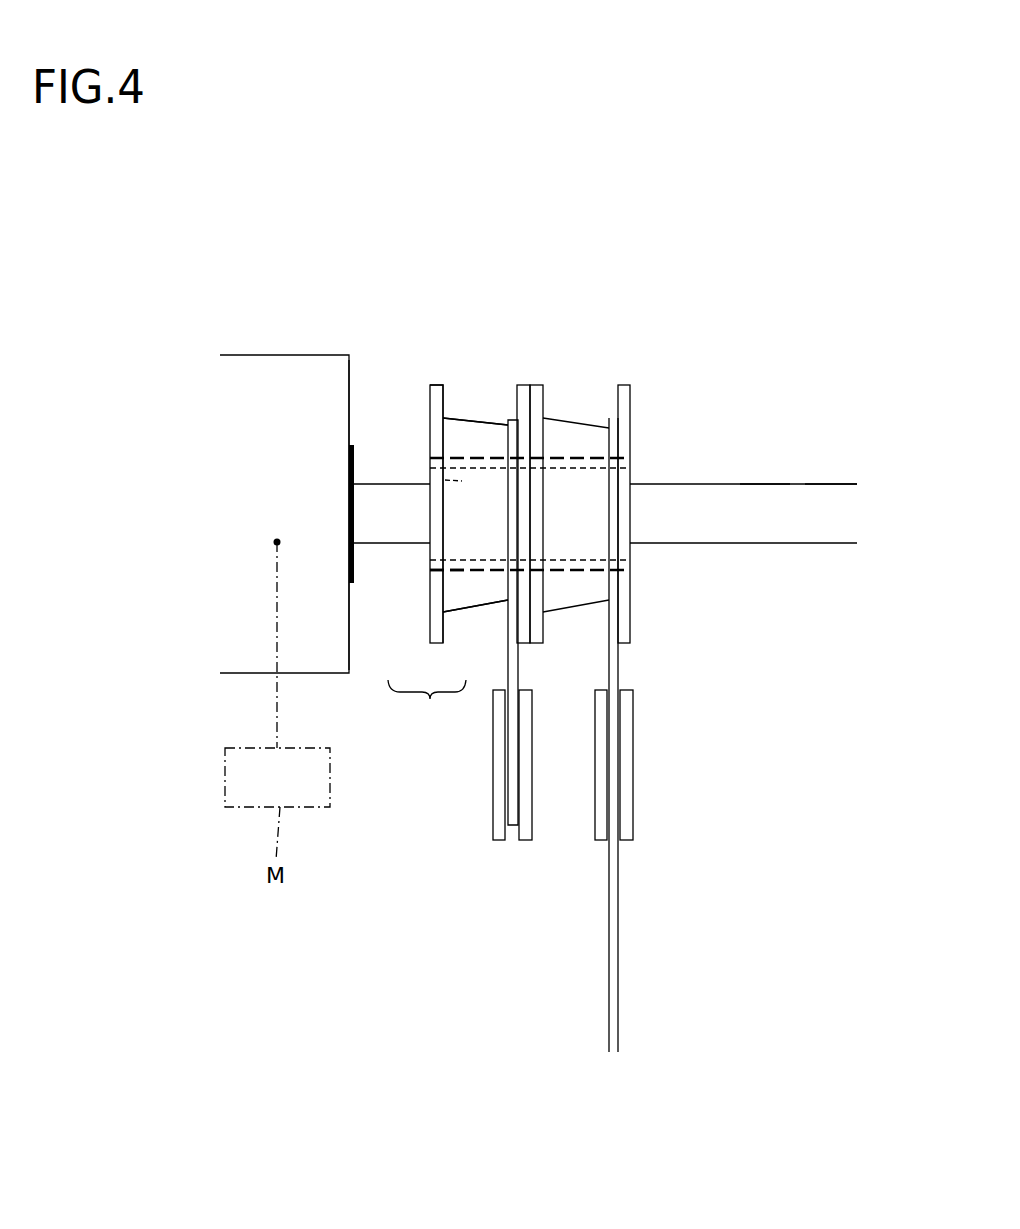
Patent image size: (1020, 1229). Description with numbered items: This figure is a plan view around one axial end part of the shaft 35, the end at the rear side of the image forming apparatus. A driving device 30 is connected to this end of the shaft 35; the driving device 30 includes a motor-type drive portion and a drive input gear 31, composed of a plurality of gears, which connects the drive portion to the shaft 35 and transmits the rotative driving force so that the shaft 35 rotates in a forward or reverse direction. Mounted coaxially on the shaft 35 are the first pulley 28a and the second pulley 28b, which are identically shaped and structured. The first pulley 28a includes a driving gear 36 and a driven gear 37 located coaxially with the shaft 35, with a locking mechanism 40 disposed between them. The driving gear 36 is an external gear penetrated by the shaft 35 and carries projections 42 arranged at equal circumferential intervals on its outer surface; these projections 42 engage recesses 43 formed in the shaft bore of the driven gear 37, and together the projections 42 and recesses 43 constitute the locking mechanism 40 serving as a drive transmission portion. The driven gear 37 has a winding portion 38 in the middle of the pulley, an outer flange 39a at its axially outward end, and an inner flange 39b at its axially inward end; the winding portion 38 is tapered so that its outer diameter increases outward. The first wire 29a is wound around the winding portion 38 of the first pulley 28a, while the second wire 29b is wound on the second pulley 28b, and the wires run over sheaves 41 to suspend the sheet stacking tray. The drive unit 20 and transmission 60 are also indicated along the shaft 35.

The drive unit 20 is at (827, 482).
The first pulley 28a is at (430, 383).
The second pulley 28b is at (623, 413).
The first wire 29a is at (511, 822).
The second wire 29b is at (617, 905).
The driving device 30 is at (234, 352).
The drive input gear 31 is at (323, 383).
The shaft 35 is at (690, 507).
The driving gear 36 is at (432, 463).
The driven gear 37 is at (457, 438).
The winding portion 38 is at (472, 442).
The outer flange 39a is at (435, 400).
The inner flange 39b is at (525, 398).
The locking mechanism 40 is at (427, 703).
The sheaves 41 is at (632, 772).
The projections 42 is at (417, 568).
The recesses 43 is at (462, 592).
The transmission 60 is at (763, 482).